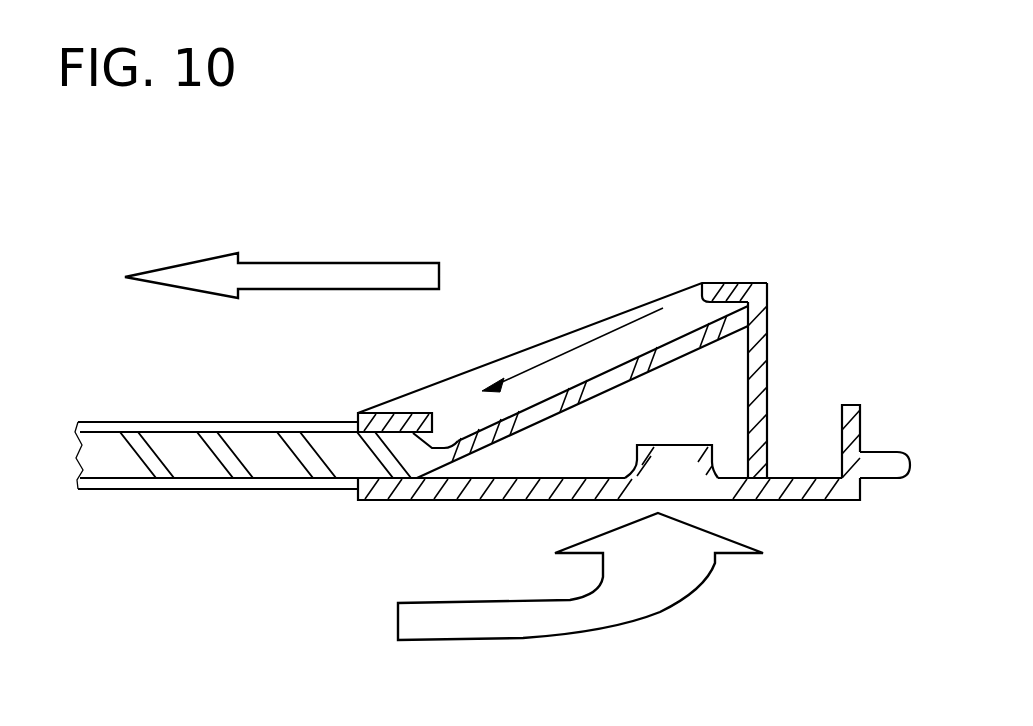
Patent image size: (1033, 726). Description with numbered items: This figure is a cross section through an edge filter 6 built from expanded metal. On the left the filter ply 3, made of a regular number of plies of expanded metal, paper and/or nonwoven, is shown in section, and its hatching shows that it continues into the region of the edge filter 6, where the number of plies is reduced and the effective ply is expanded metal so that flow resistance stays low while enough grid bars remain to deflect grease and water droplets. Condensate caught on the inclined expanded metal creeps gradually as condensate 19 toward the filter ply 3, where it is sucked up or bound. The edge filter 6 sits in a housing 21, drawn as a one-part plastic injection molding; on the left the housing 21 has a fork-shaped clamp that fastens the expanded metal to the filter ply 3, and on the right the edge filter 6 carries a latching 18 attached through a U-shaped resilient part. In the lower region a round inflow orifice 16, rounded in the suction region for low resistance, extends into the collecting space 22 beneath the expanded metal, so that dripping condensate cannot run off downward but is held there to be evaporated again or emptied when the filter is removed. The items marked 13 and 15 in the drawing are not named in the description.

The filter ply 3 is at (198, 453).
The edge filter 6 is at (635, 359).
The flow direction 13 is at (302, 278).
The projection 15 is at (676, 458).
The inflow orifice 16 is at (682, 495).
The latching 18 is at (887, 462).
The condensate 19 is at (553, 362).
The housing 21 is at (768, 325).
The collecting space 22 is at (572, 465).